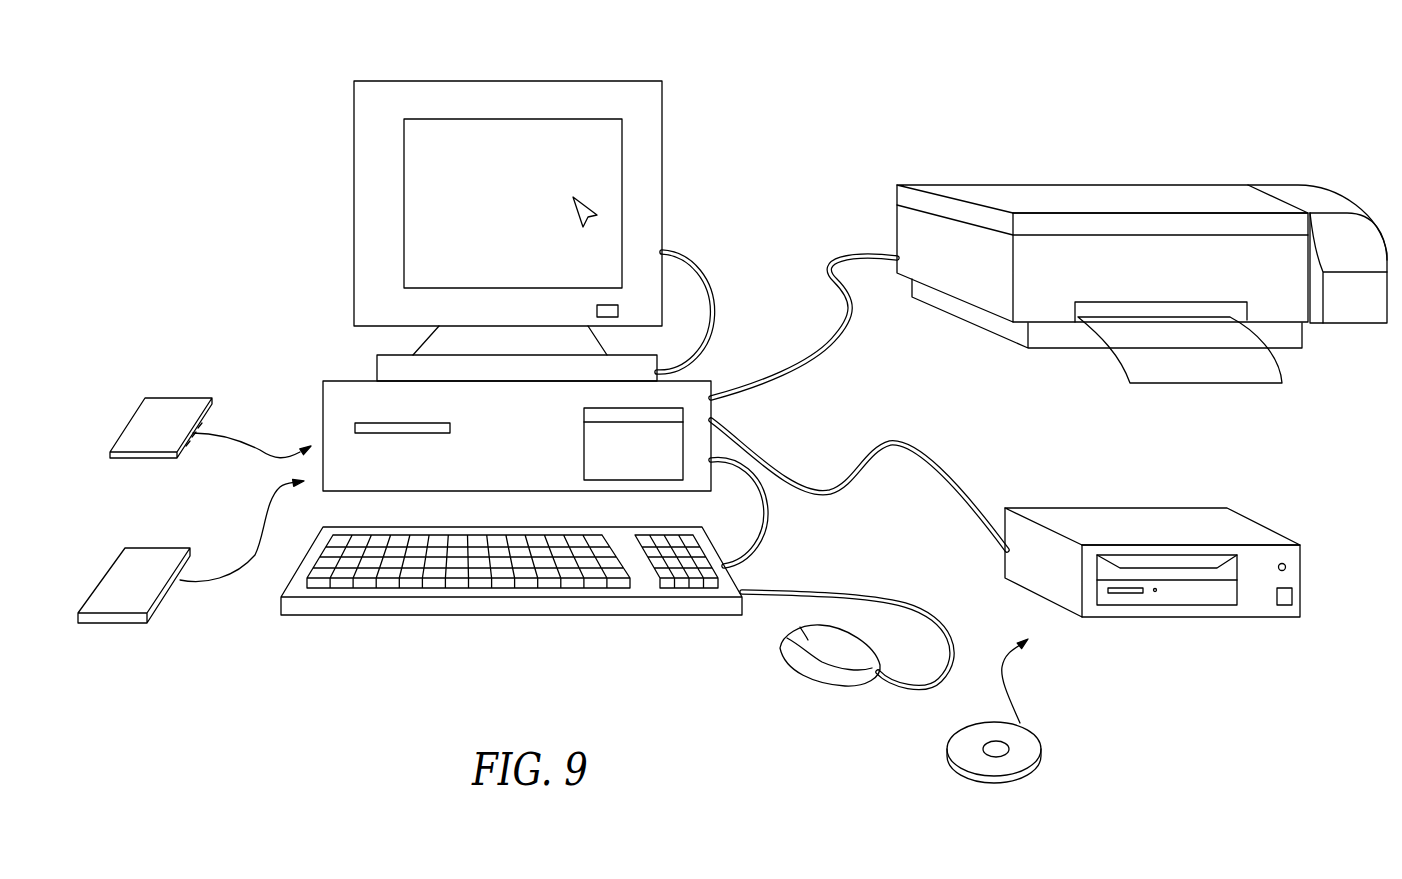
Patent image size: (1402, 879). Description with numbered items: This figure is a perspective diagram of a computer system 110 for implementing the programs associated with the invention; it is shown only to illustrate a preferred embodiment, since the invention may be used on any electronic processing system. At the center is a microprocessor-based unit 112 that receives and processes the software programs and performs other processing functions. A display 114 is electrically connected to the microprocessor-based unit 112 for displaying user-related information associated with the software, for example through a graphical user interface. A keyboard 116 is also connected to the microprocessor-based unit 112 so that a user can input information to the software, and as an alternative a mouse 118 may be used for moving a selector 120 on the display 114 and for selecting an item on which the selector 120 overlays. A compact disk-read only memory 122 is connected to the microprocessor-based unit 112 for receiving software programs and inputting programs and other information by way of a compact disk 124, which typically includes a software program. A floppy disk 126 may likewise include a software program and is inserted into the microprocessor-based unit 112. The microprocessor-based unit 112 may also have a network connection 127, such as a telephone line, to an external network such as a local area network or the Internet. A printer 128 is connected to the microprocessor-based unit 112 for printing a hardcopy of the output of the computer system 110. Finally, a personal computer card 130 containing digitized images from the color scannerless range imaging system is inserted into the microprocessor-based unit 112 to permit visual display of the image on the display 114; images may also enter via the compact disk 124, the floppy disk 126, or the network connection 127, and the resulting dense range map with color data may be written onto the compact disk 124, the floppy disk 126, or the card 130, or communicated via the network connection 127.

The computer system 110 is at (744, 130).
The microprocessor-based unit 112 is at (350, 381).
The display 114 is at (480, 81).
The keyboard 116 is at (333, 612).
The mouse 118 is at (817, 680).
The selector 120 is at (587, 205).
The compact disk-read only memory (CD-ROM) 122 is at (1108, 508).
The compact disk 124 is at (1043, 750).
The floppy disk 126 is at (123, 415).
The network connection 127 is at (323, 425).
The printer 128 is at (1098, 185).
The personal computer card (PC card) 130 is at (113, 562).